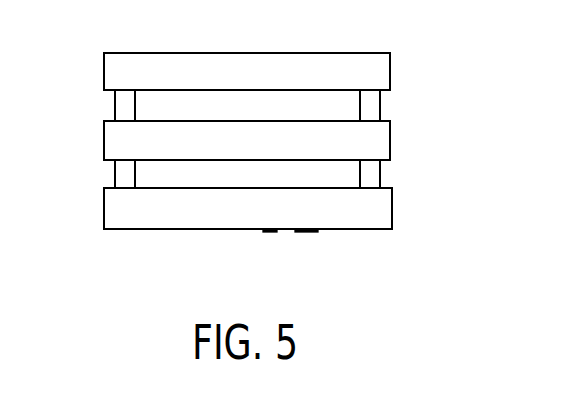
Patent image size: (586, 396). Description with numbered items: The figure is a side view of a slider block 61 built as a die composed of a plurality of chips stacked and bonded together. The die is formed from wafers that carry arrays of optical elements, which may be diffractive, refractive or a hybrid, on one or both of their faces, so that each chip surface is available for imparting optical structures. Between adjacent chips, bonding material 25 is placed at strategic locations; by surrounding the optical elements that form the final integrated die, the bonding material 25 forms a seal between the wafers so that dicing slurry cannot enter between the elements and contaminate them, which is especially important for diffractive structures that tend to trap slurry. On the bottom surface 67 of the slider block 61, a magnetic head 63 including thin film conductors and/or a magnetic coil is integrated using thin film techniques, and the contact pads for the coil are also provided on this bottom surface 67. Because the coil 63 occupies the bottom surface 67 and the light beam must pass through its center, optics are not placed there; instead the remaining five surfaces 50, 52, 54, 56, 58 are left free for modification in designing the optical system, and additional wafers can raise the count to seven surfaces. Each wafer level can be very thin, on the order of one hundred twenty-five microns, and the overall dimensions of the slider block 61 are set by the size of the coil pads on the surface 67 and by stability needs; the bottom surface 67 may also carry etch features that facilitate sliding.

The bonding material 25 is at (114, 110).
The surface 50 is at (236, 53).
The surface 52 is at (207, 90).
The surface 54 is at (271, 120).
The surface 56 is at (332, 161).
The surface 58 is at (161, 189).
The slider block 61 is at (428, 132).
The magnetic head 63 is at (278, 232).
The bottom surface 67 is at (213, 229).